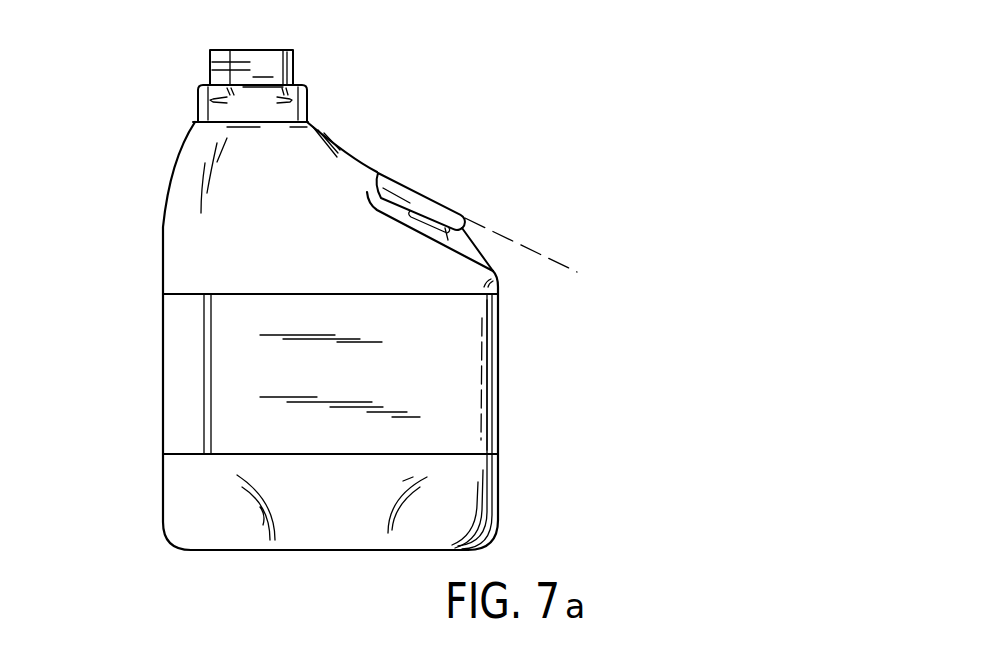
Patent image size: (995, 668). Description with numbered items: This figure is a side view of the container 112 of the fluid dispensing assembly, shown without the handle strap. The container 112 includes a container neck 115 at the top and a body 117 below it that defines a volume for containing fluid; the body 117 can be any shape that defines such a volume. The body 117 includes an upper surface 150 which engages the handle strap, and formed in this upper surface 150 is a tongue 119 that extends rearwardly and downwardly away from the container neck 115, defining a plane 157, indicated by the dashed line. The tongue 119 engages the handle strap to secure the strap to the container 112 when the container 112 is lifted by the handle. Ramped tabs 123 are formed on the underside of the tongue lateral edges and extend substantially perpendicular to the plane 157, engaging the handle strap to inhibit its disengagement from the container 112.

The container 112 is at (144, 307).
The container neck 115 is at (235, 60).
The body 117 is at (490, 388).
The tongue 119 is at (458, 212).
The ramped tabs 123 is at (414, 210).
The upper surface 150 is at (383, 190).
The plane 157 is at (569, 266).